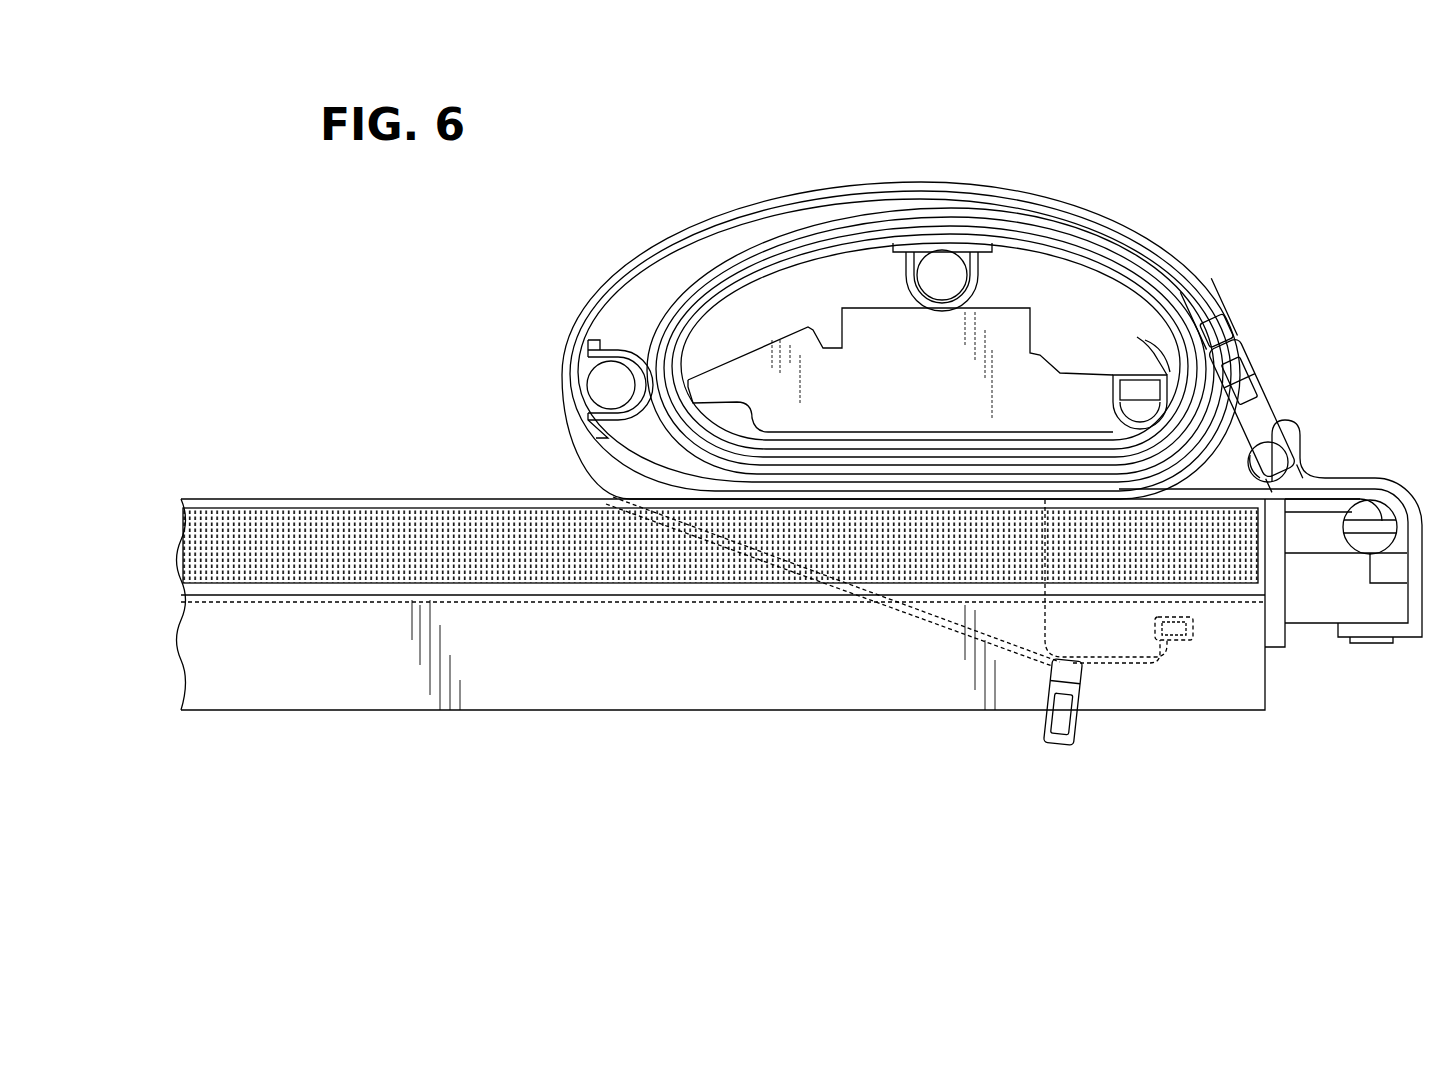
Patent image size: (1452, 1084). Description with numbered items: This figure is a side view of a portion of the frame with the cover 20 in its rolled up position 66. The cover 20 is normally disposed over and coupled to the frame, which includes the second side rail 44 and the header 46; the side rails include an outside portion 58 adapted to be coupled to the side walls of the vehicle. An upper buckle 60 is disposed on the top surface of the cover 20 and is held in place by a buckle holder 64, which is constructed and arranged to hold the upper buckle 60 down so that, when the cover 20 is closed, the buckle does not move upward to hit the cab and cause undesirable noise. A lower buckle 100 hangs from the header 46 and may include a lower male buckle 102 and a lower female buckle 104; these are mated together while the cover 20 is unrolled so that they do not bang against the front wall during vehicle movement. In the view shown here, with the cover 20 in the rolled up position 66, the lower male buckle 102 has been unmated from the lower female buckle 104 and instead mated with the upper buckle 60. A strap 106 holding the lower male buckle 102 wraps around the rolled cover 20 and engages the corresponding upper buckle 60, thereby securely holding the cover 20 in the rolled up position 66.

The cover 20 is at (655, 270).
The second side rail 44 is at (415, 497).
The header 46 is at (1338, 577).
The outside portion 58 is at (574, 556).
The upper buckle 60 is at (1260, 352).
The buckle holder 64 is at (1298, 466).
The rolled up position 66 is at (1012, 183).
The lower buckle 100 is at (1215, 300).
The lower male buckle 102 is at (1243, 330).
The lower female buckle 104 is at (1048, 740).
The strap 106 is at (565, 412).